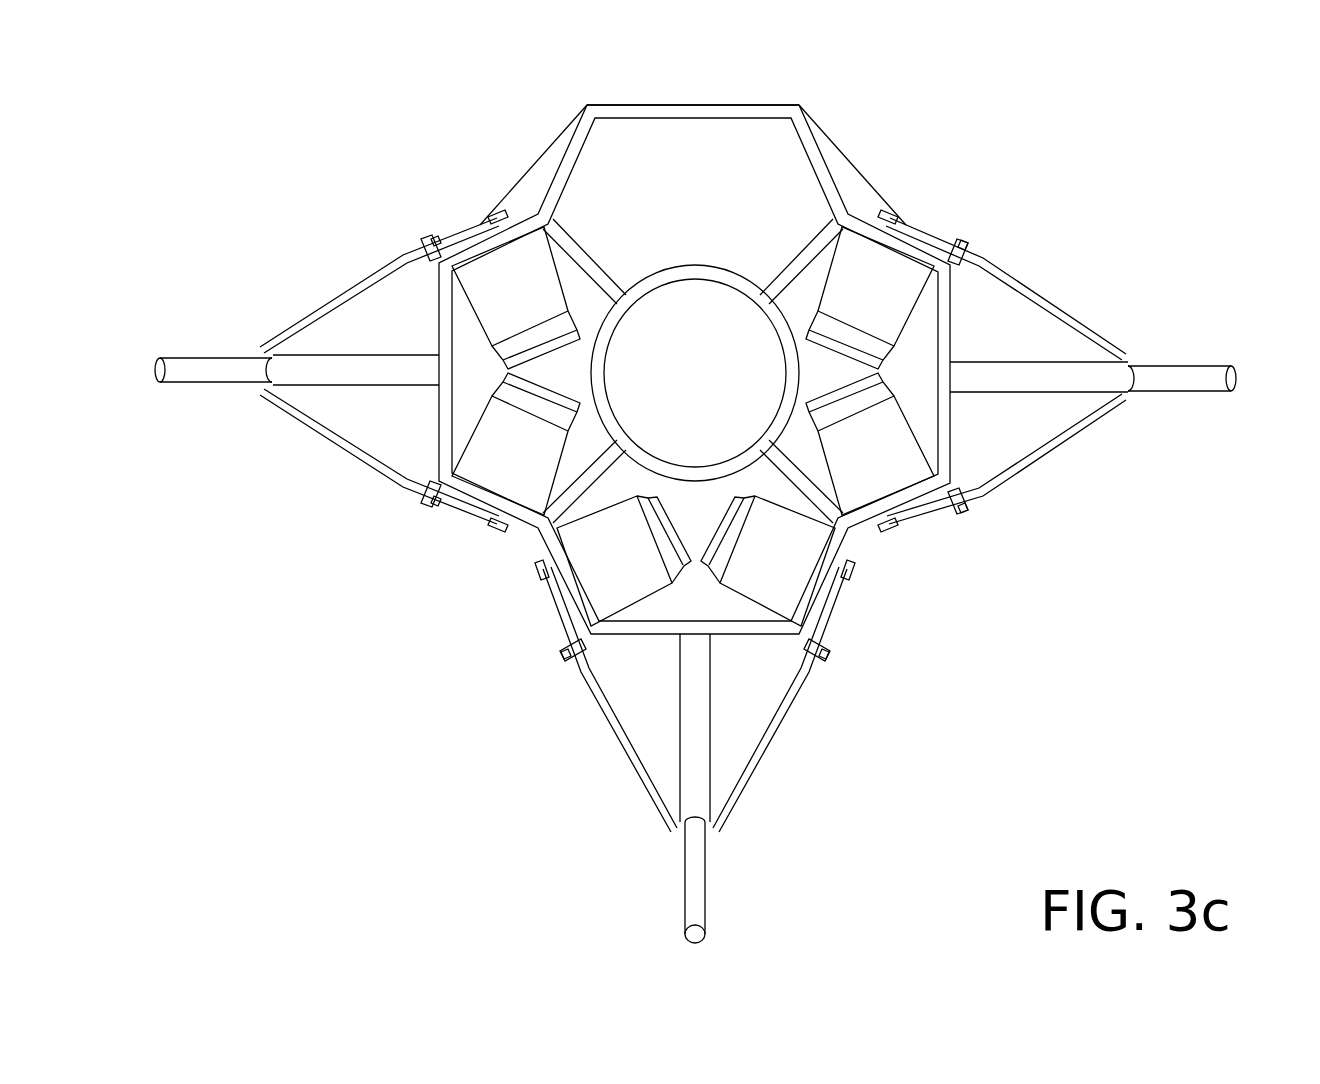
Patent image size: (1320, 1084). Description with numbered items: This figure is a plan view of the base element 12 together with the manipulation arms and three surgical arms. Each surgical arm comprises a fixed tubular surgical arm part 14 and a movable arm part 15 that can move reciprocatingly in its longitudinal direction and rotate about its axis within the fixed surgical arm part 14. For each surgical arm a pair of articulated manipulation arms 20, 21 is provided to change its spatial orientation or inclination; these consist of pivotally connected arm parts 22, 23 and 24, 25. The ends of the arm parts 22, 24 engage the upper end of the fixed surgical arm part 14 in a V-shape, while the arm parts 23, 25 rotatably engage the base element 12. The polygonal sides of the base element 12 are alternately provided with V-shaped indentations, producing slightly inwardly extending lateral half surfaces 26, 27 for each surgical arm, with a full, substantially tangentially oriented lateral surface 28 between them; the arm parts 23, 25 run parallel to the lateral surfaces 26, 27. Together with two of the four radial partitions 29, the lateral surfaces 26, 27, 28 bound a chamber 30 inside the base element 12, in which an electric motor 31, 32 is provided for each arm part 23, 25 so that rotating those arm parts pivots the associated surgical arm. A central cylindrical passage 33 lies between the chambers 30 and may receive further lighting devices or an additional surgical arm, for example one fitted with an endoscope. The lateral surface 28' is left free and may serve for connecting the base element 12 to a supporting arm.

The base element 12 is at (943, 162).
The fixed tubular surgical arm part 14 is at (350, 366).
The movable arm part 15 is at (238, 374).
The manipulation arm 20 is at (385, 252).
The manipulation arm 21 is at (1055, 268).
The arm part 22 is at (300, 332).
The arm part 23 is at (436, 236).
The arm part 24 is at (300, 422).
The arm part 25 is at (962, 240).
The lateral surface 26 is at (498, 212).
The lateral surface 27 is at (888, 210).
The lateral surface 28 is at (697, 396).
The lateral surface 28' is at (693, 85).
The radial partition 29 is at (598, 282).
The chamber 30 is at (695, 349).
The electric motor 31 is at (693, 426).
The electric motor 32 is at (693, 426).
The central cylindrical passage 33 is at (695, 373).